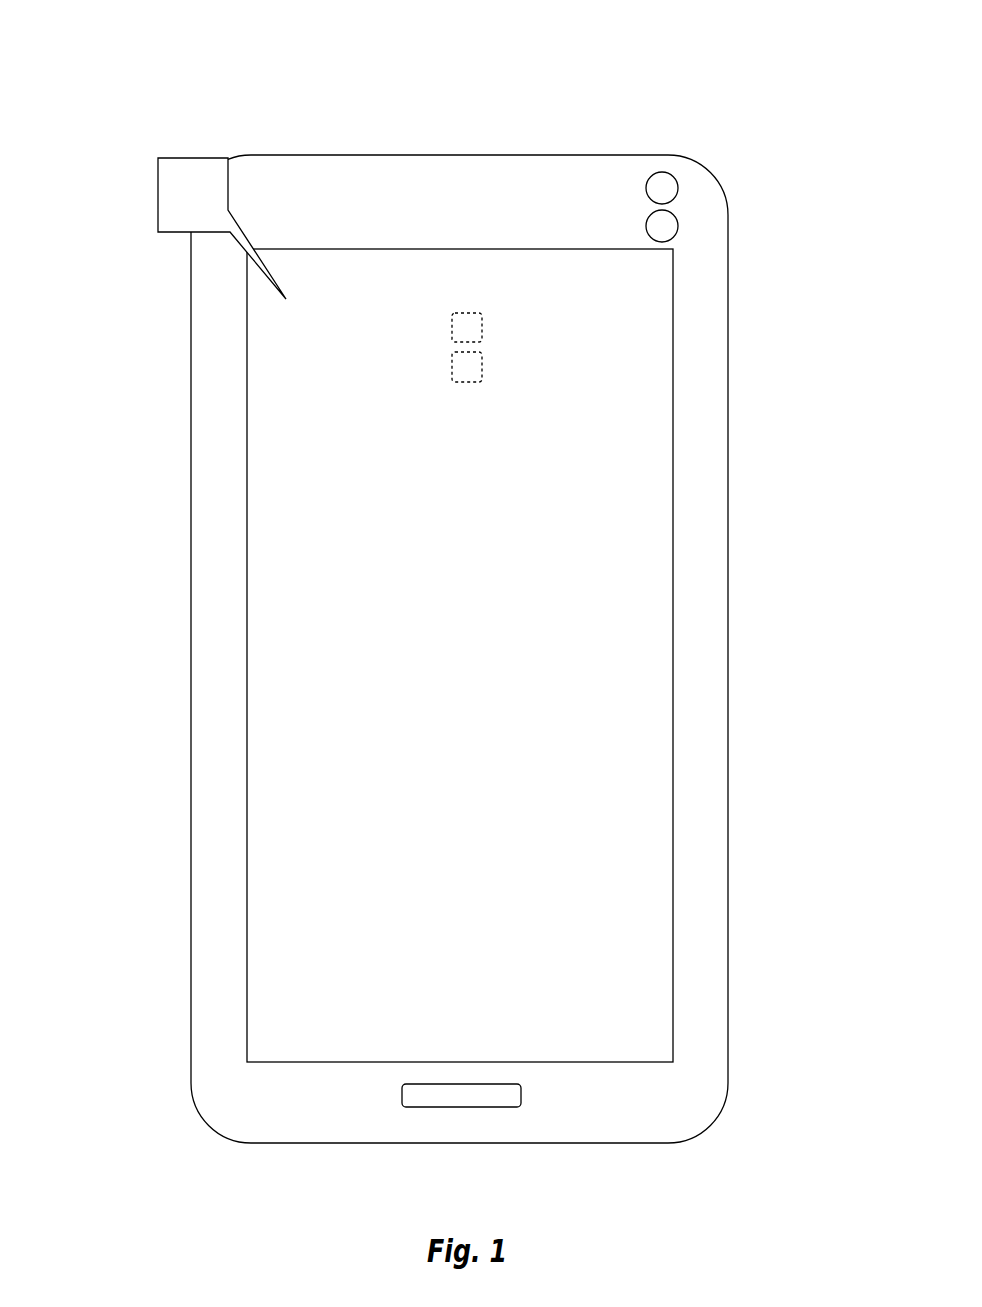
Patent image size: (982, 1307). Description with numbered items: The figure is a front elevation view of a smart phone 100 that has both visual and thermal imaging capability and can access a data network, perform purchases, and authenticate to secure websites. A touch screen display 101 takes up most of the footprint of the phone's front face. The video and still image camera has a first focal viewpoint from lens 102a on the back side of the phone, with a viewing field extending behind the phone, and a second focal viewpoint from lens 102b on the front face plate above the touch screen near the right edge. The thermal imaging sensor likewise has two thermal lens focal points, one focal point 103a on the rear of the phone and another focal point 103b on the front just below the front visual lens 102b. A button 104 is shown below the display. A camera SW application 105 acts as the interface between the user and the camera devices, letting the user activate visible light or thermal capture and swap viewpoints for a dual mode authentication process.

The smart phone 100 is at (467, 82).
The touch screen display 101 is at (247, 538).
The lens 102a is at (482, 330).
The lens 102b is at (645, 188).
The thermal lens focal point 103a is at (482, 368).
The thermal lens focal point 103b is at (678, 226).
The home button 104 is at (458, 1083).
The SW application 105 is at (197, 157).